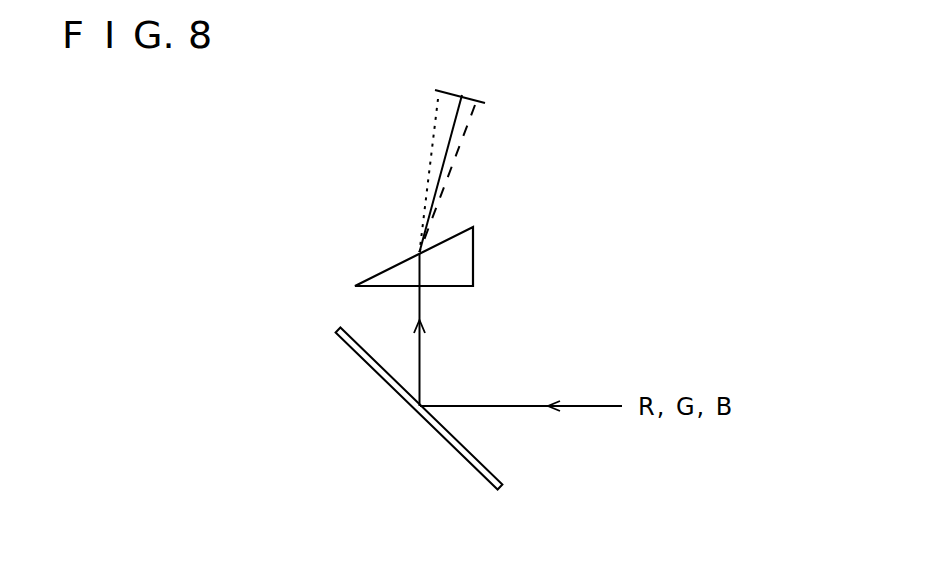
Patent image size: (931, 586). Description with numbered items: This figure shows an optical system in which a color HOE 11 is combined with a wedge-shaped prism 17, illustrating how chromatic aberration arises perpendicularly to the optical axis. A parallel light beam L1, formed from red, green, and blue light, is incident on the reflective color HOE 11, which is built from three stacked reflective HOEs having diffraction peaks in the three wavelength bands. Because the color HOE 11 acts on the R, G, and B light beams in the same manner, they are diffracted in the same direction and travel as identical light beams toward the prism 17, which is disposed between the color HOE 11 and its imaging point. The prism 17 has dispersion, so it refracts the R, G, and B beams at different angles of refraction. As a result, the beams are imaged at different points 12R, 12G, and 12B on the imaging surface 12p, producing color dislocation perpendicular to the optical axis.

The color HOE 11 is at (454, 449).
The wedge-shaped prism 17 is at (473, 257).
The parallel light beam L1 is at (530, 407).
The imaging point for red light 12R is at (443, 92).
The imaging point for green light 12G is at (477, 75).
The imaging point for blue light 12B is at (480, 102).
The imaging surface 12p is at (471, 100).